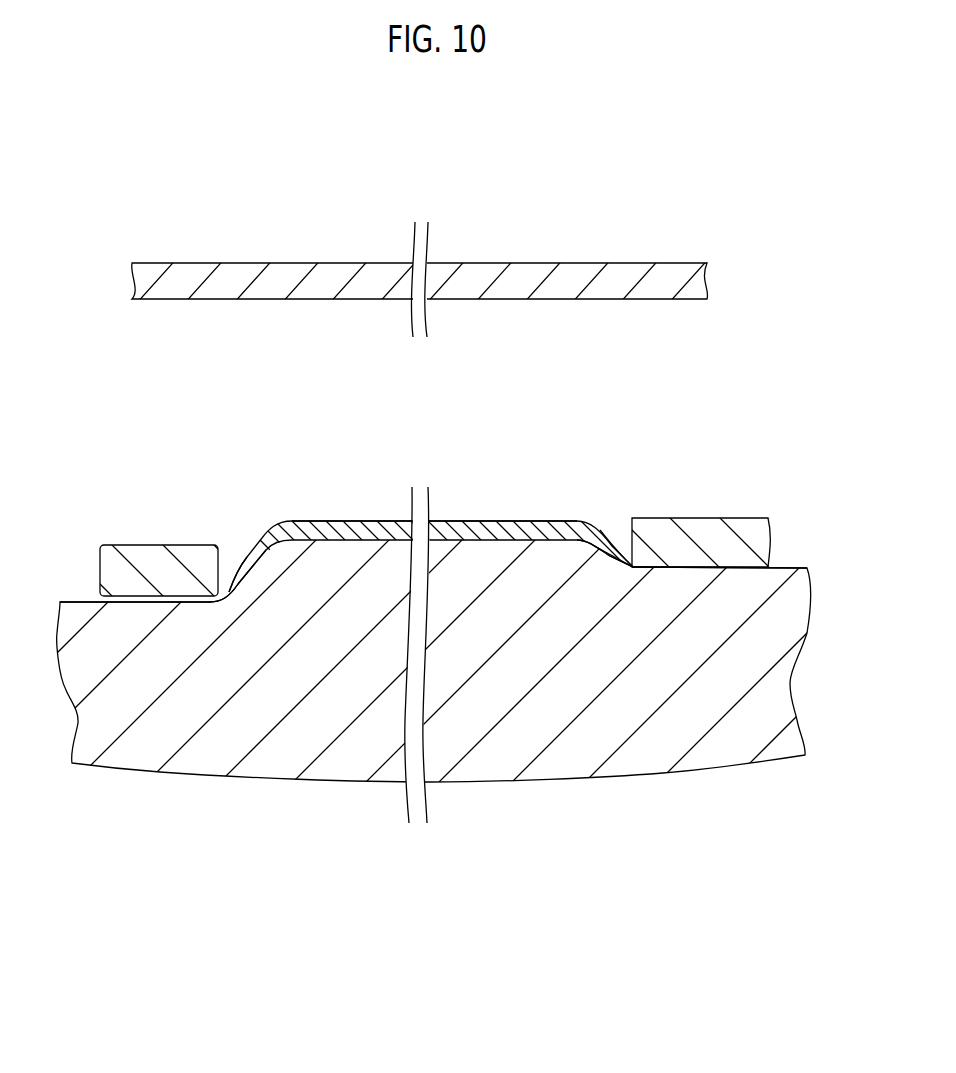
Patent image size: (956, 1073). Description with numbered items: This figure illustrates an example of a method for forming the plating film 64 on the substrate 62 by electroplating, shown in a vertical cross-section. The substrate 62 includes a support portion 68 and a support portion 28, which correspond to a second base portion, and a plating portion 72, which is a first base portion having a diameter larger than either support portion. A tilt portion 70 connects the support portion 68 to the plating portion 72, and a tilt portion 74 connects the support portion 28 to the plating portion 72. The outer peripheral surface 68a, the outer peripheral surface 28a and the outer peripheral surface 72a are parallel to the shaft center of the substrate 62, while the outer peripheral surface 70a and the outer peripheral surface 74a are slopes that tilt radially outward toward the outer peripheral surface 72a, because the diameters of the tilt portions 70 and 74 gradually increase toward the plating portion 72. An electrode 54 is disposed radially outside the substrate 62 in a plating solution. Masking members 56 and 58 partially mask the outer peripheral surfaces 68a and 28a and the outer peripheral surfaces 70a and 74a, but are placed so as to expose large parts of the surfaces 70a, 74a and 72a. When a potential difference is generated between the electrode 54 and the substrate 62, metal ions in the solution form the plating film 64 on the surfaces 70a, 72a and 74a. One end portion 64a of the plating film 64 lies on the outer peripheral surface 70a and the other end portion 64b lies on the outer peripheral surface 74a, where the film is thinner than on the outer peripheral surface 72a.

The support portion 28 is at (110, 740).
The outer peripheral surface 28a is at (90, 600).
The electrode 54 is at (530, 277).
The masking member 56 is at (700, 533).
The masking member 58 is at (140, 560).
The substrate 62 is at (200, 755).
The plating film 64 is at (392, 535).
The one end portion 64a is at (623, 560).
The other end portion 64b is at (230, 577).
The support portion 68 is at (723, 740).
The outer peripheral surface 68a is at (783, 565).
The tilt portion 70 is at (610, 570).
The outer peripheral surface 70a is at (617, 553).
The plating portion 72 is at (327, 740).
The outer peripheral surface 72a is at (350, 538).
The tilt portion 74 is at (250, 586).
The outer peripheral surface 74a is at (240, 548).